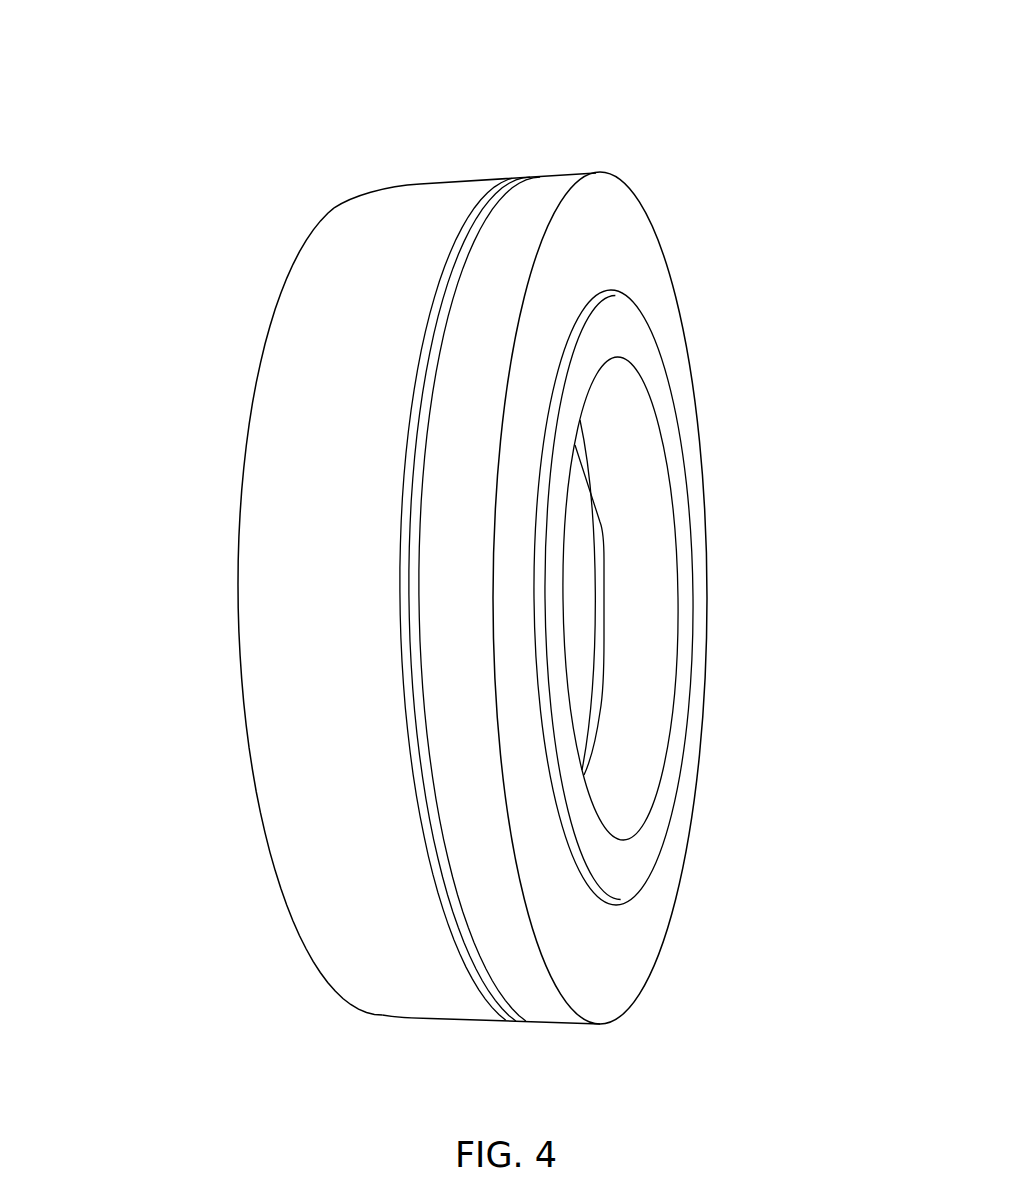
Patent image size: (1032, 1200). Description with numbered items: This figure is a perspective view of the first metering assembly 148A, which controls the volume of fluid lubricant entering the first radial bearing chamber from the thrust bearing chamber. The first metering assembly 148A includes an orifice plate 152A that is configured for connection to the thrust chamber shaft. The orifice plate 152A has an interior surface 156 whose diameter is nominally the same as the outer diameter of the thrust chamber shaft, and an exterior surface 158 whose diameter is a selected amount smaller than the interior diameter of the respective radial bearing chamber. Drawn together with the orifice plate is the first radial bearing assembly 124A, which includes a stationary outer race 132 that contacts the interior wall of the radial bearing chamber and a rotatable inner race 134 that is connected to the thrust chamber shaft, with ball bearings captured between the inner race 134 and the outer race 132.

The first radial bearing assembly 124A is at (195, 541).
The stationary outer race 132 is at (390, 205).
The exterior surface 158 is at (542, 190).
The first metering assembly 148A is at (738, 405).
The orifice plate 152A is at (613, 328).
The rotatable inner race 134 is at (577, 537).
The interior surface 156 is at (637, 590).